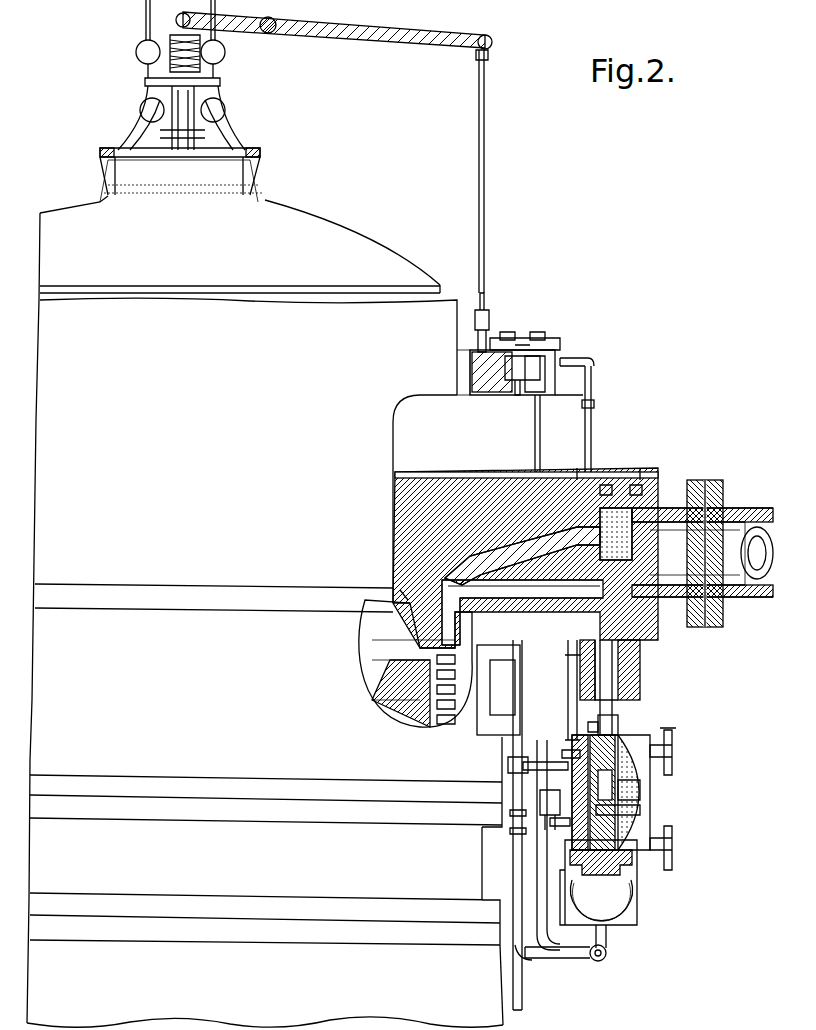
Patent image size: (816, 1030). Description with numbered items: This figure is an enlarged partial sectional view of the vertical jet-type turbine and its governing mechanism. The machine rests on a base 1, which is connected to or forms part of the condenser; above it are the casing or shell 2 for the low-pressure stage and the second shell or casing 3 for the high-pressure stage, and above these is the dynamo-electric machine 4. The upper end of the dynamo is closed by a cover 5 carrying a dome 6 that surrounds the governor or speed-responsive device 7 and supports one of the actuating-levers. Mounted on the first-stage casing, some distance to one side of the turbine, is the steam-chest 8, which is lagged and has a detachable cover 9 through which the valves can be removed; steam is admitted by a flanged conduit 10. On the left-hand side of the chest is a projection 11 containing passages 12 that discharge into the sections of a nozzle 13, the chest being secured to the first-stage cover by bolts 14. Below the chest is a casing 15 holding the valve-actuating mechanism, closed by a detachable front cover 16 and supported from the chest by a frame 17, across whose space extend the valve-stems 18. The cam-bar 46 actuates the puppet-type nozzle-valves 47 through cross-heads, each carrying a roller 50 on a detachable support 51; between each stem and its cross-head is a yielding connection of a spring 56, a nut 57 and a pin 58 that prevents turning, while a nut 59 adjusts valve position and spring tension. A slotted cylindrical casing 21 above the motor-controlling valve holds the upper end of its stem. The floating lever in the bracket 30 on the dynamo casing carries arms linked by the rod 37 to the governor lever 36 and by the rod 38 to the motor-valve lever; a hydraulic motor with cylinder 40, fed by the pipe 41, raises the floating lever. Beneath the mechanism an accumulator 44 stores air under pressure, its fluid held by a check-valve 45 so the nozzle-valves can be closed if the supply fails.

The base 1 is at (265, 620).
The casing or shell 2 is at (266, 803).
The second shell or casing 3 is at (214, 643).
The dynamo-electric machine 4 is at (248, 374).
The cover 5 is at (332, 230).
The dome 6 is at (145, 24).
The governor or speed-responsive device 7 is at (145, 82).
The steam-chest 8 is at (630, 470).
The detachable cover 9 is at (608, 476).
The conduit 10 is at (758, 555).
The projection 11 is at (393, 560).
The passages 12 is at (548, 600).
The nozzle 13 is at (372, 642).
The bolts 14 is at (393, 592).
The casing 15 is at (638, 850).
The detachable front cover 16 is at (652, 791).
The frame 17 is at (628, 703).
The valve-stems 18 is at (618, 717).
The slotted cylindrical casing 21 is at (570, 680).
The bracket 30 is at (492, 396).
The lever 36 is at (390, 40).
The rod 37 is at (485, 185).
The rod 38 is at (593, 412).
The cylinder 40 is at (546, 395).
The pipe 41 is at (534, 446).
The accumulator 44 is at (625, 892).
The check-valve 45 is at (557, 825).
The cam-bar 46 is at (630, 796).
The nozzle-valves 47 is at (635, 555).
The roller 50 is at (598, 876).
The detachable support 51 is at (652, 815).
The spring 56 is at (652, 742).
The nut 57 is at (572, 752).
The pin 58 is at (664, 782).
The nut 59 is at (590, 726).